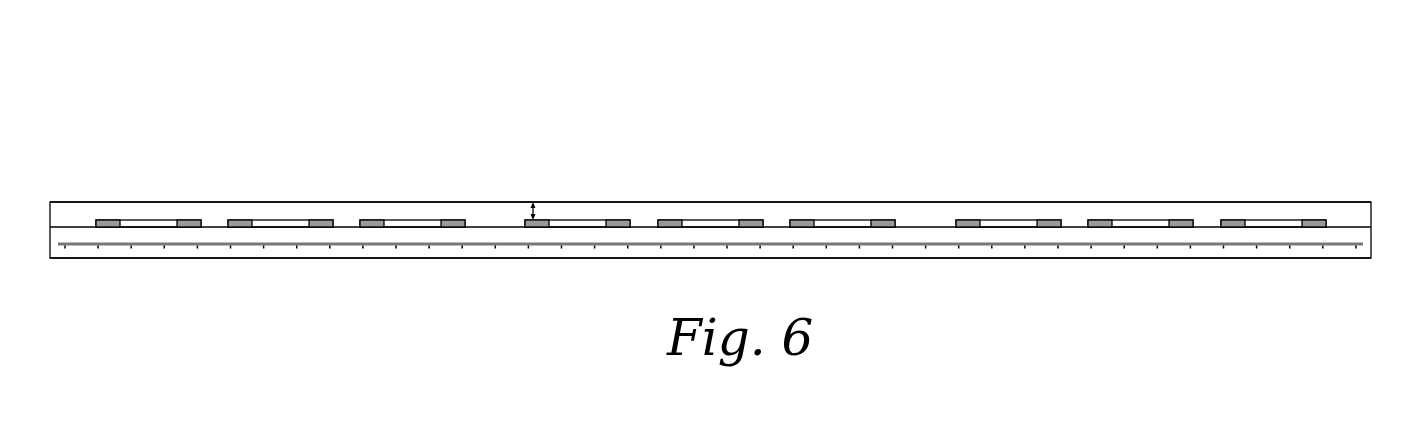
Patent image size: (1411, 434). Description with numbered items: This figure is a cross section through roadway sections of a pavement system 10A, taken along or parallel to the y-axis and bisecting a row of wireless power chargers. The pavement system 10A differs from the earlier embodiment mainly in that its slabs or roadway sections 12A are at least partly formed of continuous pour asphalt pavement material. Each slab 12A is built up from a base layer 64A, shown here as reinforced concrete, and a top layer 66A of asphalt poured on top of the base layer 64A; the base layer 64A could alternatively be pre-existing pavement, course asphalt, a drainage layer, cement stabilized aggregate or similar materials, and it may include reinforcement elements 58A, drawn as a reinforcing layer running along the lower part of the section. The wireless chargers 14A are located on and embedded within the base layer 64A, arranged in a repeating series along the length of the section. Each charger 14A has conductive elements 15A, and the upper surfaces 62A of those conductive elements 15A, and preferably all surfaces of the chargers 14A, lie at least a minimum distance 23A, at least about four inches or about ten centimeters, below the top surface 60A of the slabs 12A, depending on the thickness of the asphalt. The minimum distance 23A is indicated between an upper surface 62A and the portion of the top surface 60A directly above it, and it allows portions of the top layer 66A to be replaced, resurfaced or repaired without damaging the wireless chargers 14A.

The pavement system 10A is at (581, 93).
The slabs or roadway sections 12A is at (1380, 180).
The wireless chargers 14A is at (203, 207).
The conductive elements 15A is at (318, 220).
The minimum distance 23A is at (532, 209).
The reinforcement elements 58A is at (58, 244).
The top surface 60A is at (947, 202).
The upper surfaces 62A is at (810, 220).
The base layer 64A is at (50, 258).
The top layer 66A is at (50, 202).